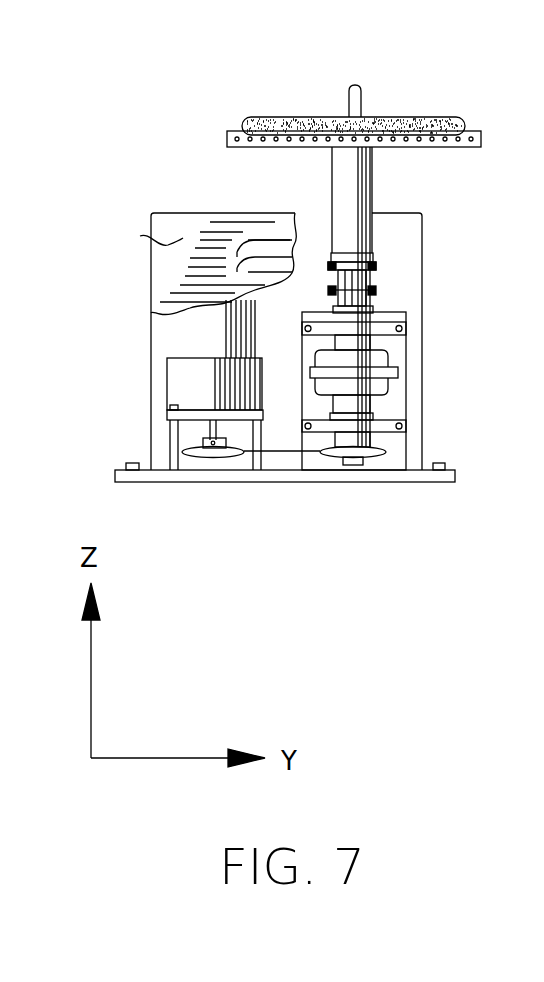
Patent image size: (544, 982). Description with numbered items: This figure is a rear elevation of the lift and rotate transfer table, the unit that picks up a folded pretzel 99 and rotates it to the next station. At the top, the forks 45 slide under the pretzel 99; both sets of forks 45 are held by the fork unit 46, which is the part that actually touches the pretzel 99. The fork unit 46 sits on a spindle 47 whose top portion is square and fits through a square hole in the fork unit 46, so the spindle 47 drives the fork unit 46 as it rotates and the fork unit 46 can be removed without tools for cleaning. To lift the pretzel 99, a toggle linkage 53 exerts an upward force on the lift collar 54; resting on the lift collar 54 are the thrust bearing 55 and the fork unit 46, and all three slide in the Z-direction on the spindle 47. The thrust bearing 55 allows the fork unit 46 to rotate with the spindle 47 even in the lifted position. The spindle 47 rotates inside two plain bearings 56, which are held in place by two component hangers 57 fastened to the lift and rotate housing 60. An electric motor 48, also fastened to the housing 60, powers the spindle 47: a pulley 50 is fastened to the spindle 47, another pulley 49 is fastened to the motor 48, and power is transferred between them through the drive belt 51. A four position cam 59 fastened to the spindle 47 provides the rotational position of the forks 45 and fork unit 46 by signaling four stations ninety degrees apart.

The forks 45 is at (237, 137).
The folded pretzel 99 is at (296, 125).
The spindle 47 is at (353, 104).
The fork unit 46 is at (350, 167).
The lift and rotate housing 60 is at (183, 238).
The electric motor 48 is at (193, 380).
The thrust bearing 55 is at (372, 258).
The lift collar 54 is at (376, 268).
The toggle linkage 53 is at (366, 288).
The component hangers 57 is at (377, 330).
The plain bearings 56 is at (350, 343).
The four position cam 59 is at (377, 371).
The pulley 49 is at (200, 458).
The pulley 50 is at (368, 460).
The drive belt 51 is at (283, 453).